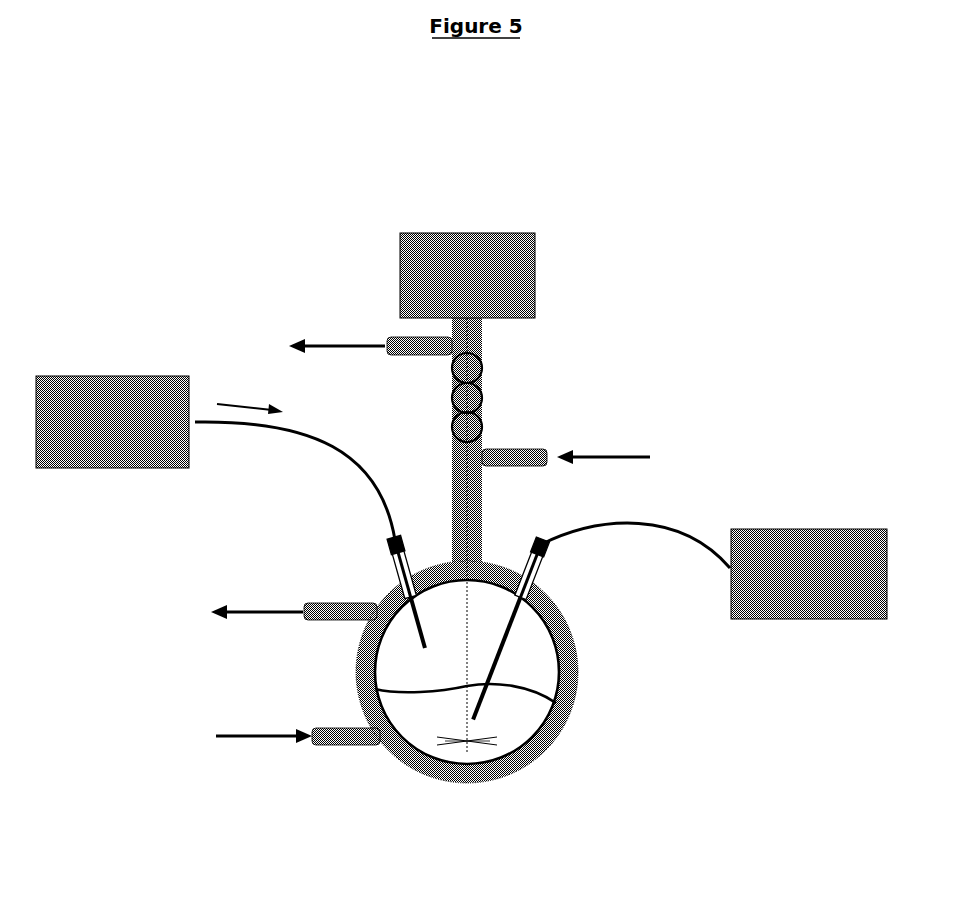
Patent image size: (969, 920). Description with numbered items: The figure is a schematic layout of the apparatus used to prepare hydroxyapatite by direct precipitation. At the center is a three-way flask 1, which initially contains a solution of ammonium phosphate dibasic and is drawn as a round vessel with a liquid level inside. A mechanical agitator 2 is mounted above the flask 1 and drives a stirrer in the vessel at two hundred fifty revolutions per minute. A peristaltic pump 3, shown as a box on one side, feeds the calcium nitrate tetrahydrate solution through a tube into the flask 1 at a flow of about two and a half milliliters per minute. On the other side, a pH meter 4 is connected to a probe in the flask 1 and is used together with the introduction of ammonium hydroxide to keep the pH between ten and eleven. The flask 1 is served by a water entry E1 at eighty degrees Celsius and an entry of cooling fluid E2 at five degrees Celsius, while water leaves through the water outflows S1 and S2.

The three-way flask 1 is at (577, 652).
The mechanical agitator 2 is at (467, 275).
The peristaltic pump 3 is at (215, 458).
The pH meter 4 is at (669, 486).
The water outflow S1 is at (294, 603).
The water outflow S2 is at (370, 338).
The water entry E1 is at (298, 727).
The entry of cooling fluid E2 is at (566, 452).